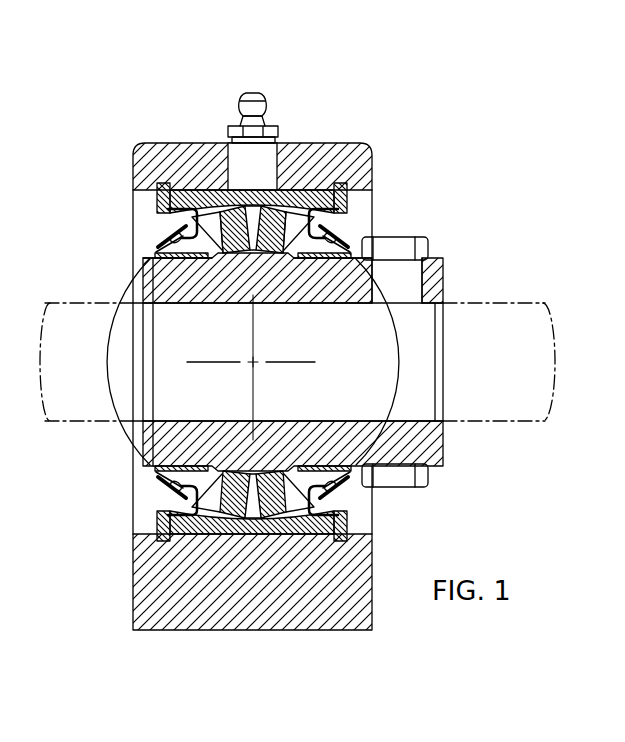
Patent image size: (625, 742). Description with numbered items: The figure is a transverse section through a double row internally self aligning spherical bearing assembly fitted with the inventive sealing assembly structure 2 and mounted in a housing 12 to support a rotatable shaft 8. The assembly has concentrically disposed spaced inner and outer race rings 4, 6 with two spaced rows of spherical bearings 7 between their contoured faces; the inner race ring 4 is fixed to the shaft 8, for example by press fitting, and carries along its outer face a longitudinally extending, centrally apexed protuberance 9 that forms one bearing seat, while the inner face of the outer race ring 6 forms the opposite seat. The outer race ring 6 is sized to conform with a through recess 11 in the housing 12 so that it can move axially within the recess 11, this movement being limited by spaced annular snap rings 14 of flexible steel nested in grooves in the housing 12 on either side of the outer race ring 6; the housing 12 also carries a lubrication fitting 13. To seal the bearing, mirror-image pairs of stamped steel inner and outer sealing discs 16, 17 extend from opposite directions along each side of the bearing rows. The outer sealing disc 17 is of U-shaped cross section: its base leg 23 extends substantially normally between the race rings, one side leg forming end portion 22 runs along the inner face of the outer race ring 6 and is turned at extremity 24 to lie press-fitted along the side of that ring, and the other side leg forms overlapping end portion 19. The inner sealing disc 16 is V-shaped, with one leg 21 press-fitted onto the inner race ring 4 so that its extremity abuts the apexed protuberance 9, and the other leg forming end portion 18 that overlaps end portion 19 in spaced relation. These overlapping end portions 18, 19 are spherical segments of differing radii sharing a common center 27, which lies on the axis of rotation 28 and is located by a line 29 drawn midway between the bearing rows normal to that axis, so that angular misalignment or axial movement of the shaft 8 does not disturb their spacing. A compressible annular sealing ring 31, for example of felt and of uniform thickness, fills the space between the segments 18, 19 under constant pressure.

The sealing assembly structure 2 is at (383, 196).
The inner race ring 4 is at (350, 288).
The outer race ring 6 is at (348, 147).
The spherical bearings 7 is at (243, 237).
The rotatable shaft 8 is at (507, 382).
The centrally apexed protuberance 9 is at (252, 251).
The through recess 11 is at (147, 227).
The housing 12 is at (298, 147).
The lubrication fitting 13 is at (252, 92).
The annular snap rings 14 is at (165, 183).
The inner sealing disc 16 is at (183, 262).
The outer sealing disc 17 is at (318, 218).
The end portion of inner sealing disc 18 is at (336, 229).
The end portion of outer sealing disc 19 is at (221, 255).
The leg of inner sealing disc 21 is at (150, 268).
The end portion of outer sealing disc 22 is at (200, 192).
The base leg 23 is at (223, 251).
The turned extremity 24 is at (153, 205).
The common center 27 is at (258, 360).
The axis of rotation 28 is at (205, 365).
The line 29 is at (257, 393).
The annular sealing ring 31 is at (160, 492).